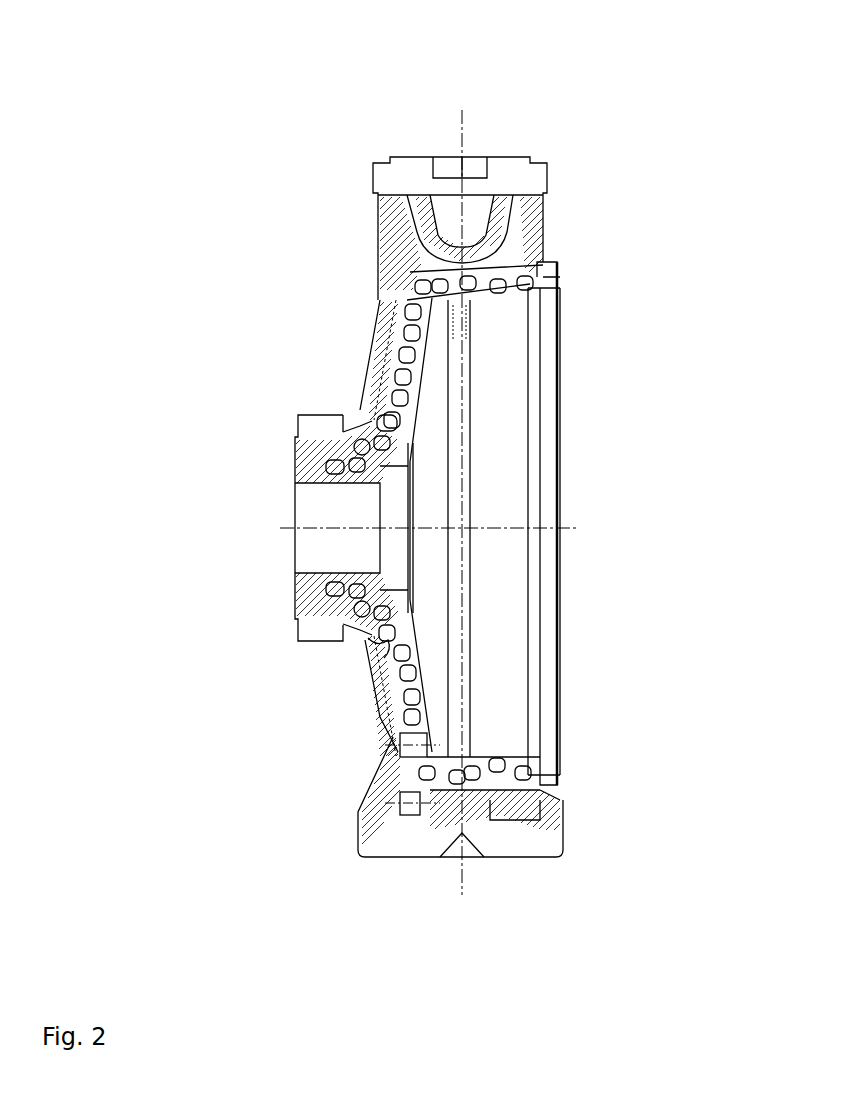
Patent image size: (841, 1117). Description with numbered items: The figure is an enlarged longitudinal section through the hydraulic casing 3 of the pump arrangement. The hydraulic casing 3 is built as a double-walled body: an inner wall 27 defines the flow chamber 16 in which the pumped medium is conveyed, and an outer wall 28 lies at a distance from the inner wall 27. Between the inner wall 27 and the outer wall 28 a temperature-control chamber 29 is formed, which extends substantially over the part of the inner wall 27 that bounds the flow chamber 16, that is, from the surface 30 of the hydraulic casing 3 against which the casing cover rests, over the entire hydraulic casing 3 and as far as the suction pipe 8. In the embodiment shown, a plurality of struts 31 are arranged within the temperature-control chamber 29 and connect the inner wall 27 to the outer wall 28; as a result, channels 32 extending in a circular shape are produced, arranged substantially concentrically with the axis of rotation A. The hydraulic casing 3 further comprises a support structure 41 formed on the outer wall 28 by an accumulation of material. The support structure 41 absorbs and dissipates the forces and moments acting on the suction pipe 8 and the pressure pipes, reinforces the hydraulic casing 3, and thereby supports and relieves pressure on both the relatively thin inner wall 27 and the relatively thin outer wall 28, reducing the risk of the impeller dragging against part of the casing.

The hydraulic casing 3 is at (190, 172).
The struts 31 is at (392, 408).
The support structure 41 is at (385, 340).
The channels 32 is at (402, 312).
The suction pipe 8 is at (302, 588).
The outer wall 28 is at (358, 625).
The temperature-control chamber 29 is at (381, 641).
The inner wall 27 is at (406, 684).
The flow chamber 16 is at (505, 687).
The surface 30 is at (562, 757).
The axis of rotation A is at (552, 528).